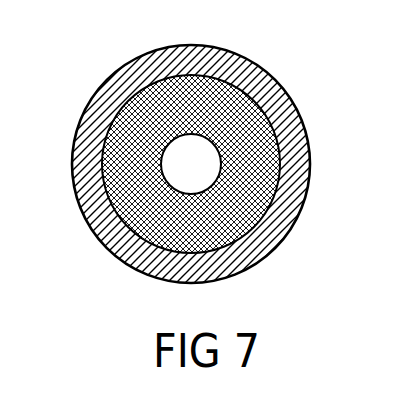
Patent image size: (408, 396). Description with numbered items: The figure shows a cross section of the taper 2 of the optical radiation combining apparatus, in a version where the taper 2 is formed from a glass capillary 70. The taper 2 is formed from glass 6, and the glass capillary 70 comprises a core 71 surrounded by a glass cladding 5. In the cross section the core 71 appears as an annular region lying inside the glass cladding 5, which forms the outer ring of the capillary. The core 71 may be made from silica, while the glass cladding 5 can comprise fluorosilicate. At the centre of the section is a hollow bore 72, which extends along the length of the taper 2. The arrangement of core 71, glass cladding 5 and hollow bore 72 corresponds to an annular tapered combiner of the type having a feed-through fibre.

The taper 2 is at (180, 152).
The glass cladding 5 is at (240, 55).
The glass 6 is at (127, 158).
The glass capillary 70 is at (112, 253).
The core 71 is at (193, 77).
The hollow bore 72 is at (212, 185).